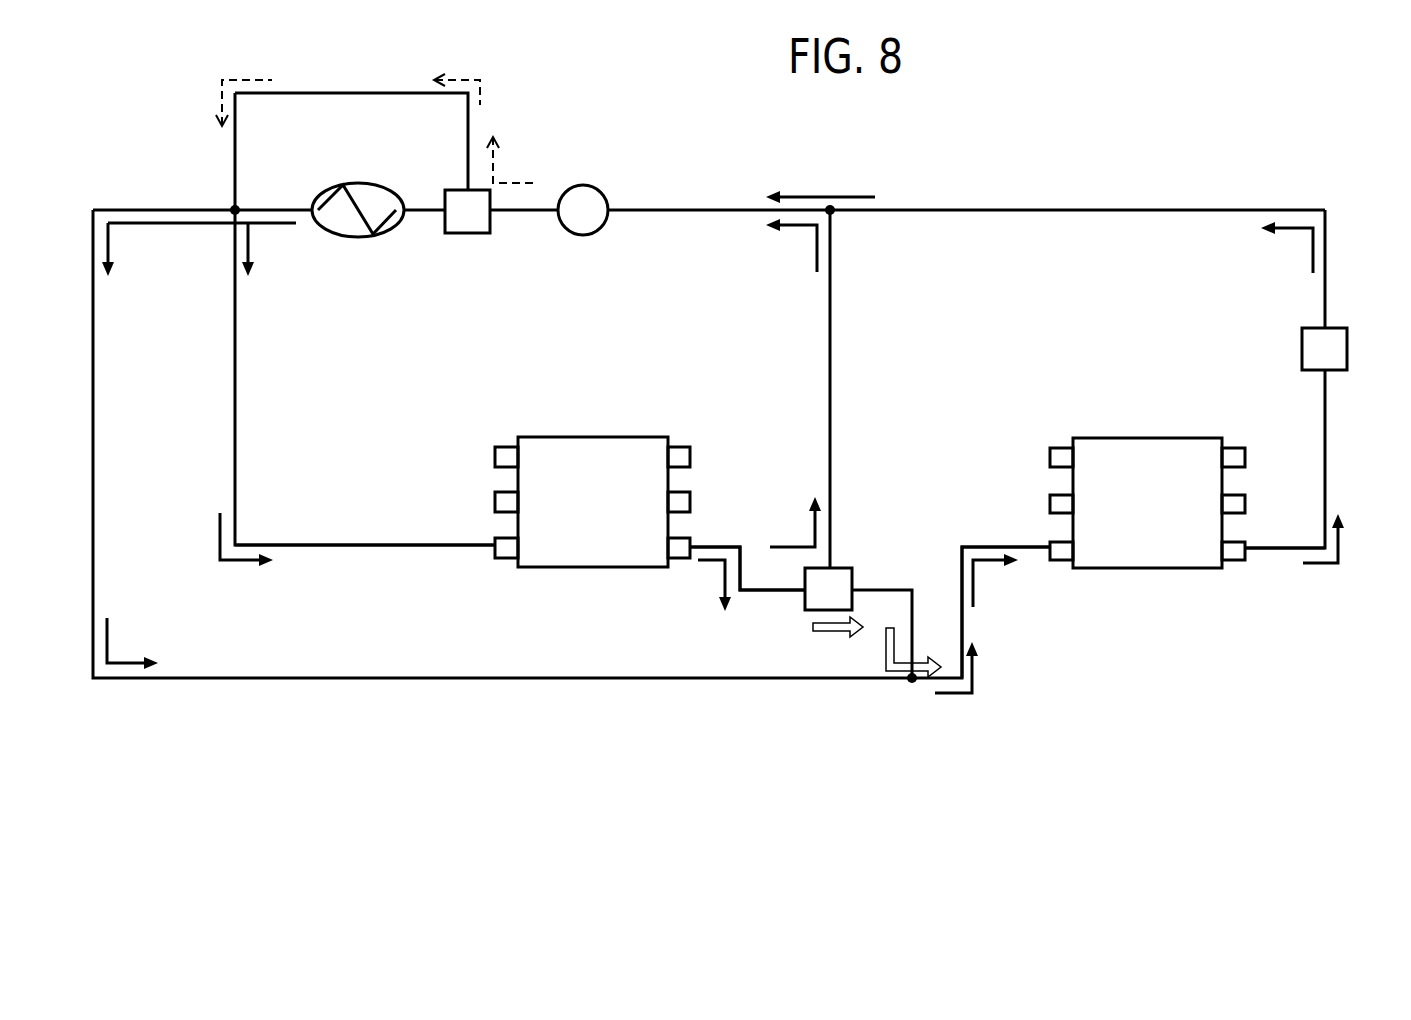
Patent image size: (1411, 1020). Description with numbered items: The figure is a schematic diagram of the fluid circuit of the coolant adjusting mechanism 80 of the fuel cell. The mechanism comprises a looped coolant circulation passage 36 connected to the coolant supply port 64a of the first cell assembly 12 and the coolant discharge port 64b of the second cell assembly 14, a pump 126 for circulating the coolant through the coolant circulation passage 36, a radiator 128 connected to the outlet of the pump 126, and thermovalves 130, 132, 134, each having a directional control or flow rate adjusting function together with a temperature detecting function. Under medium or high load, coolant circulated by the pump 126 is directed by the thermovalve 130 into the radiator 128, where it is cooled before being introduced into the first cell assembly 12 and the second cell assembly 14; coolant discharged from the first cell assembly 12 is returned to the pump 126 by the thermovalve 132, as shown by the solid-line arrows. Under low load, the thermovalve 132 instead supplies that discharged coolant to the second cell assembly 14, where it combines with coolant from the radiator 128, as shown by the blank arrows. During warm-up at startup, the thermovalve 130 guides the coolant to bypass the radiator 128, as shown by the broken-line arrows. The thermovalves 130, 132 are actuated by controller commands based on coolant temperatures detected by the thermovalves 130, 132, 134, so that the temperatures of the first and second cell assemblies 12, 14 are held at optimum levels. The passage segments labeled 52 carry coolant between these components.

The coolant adjusting mechanism 80 is at (742, 160).
The radiator 128 is at (355, 183).
The thermovalve 130 is at (468, 234).
The pump 126 is at (583, 185).
The first cell assembly 12 is at (592, 434).
The second cell assembly 14 is at (1150, 434).
The coolant circulation passage 36 is at (379, 545).
The coolant connecting pipe 52 is at (769, 592).
The coolant supply port 64a is at (494, 539).
The coolant discharge port 64b is at (691, 545).
The thermovalve 132 is at (843, 568).
The thermovalve 134 is at (1347, 353).